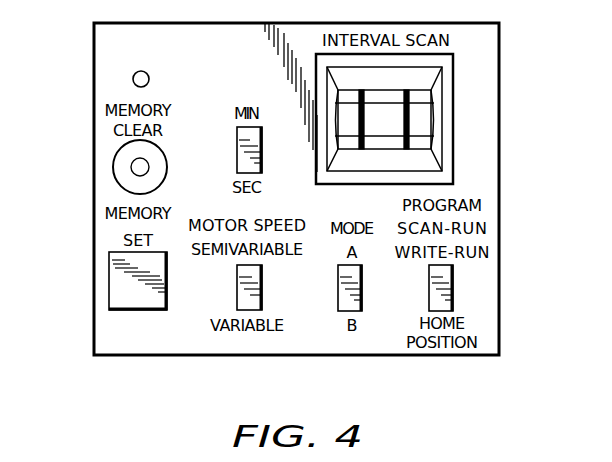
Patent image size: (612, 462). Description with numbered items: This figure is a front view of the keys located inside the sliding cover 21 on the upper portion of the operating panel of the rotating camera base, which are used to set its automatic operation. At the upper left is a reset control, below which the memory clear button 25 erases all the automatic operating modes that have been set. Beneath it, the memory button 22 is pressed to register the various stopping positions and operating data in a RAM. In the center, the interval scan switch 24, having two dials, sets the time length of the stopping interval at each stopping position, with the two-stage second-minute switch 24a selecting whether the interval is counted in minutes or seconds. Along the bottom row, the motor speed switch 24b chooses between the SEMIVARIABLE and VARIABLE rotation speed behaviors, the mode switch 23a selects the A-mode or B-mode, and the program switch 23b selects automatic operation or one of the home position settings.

The sliding cover 21 is at (133, 79).
The memory clear button 25 is at (120, 173).
The memory button 22 is at (118, 287).
The second-minute switch 24a is at (237, 142).
The interval scan switch 24 is at (423, 120).
The motor speed switch 24b is at (237, 290).
The mode switch 23a is at (340, 308).
The program switch 23b is at (453, 290).